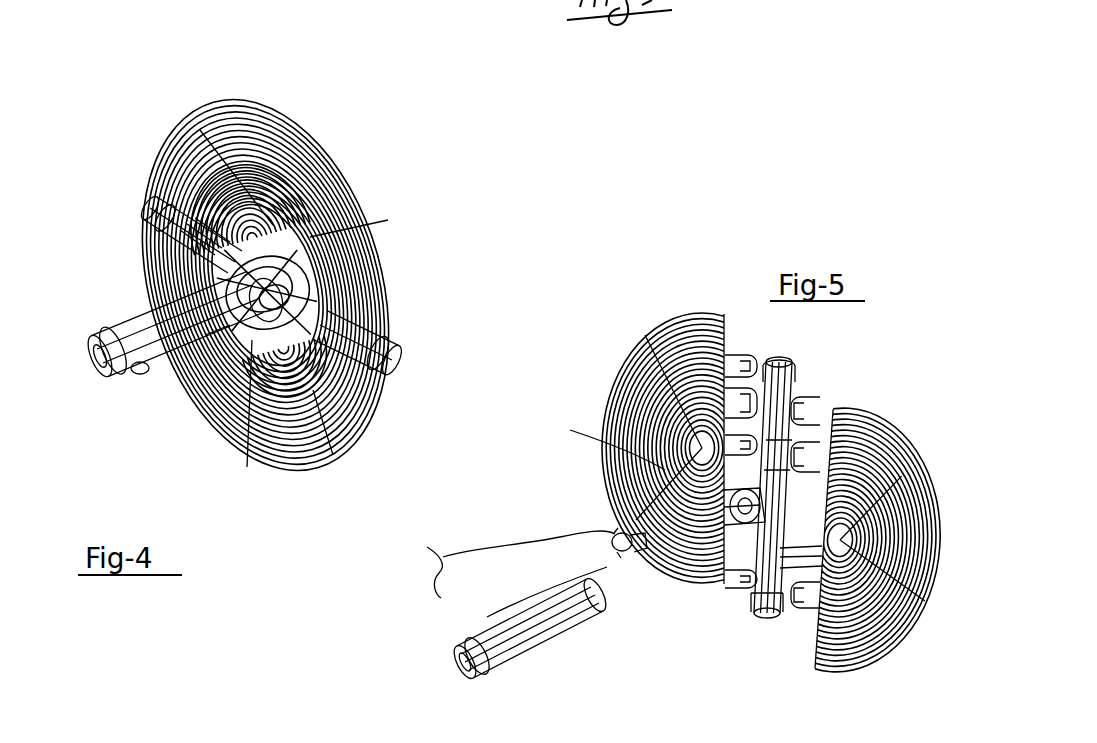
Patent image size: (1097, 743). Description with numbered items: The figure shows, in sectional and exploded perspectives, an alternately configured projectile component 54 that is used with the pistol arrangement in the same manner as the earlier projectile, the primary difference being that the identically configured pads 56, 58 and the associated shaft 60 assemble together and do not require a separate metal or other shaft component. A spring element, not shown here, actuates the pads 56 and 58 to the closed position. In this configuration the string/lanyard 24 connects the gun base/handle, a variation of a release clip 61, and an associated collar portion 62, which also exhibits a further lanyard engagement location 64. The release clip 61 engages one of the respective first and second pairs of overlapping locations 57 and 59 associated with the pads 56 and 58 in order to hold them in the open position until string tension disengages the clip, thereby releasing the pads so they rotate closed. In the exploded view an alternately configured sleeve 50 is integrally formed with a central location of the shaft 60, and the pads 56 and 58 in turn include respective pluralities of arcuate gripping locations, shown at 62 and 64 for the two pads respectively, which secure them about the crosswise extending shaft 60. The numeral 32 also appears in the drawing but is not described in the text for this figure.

In FIG. 4, the string/lanyard 24 is at (203, 343).
In FIG. 5, the string/lanyard 24 is at (517, 543).
In FIG. 4, the fitting 32 is at (201, 371).
In FIG. 5, the sleeve 50 is at (732, 598).
In FIG. 4, the projectile component 54 is at (420, 185).
In FIG. 5, the projectile component 54 is at (690, 292).
In FIG. 4, the pad 56 is at (300, 157).
In FIG. 5, the pad 56 is at (620, 377).
In FIG. 4, the first pair of overlapping locations 57 is at (142, 230).
In FIG. 5, the first pair of overlapping locations 57 is at (672, 465).
In FIG. 4, the pad 58 is at (230, 413).
In FIG. 5, the pad 58 is at (778, 538).
In FIG. 4, the second pair of overlapping locations 59 is at (249, 450).
In FIG. 5, the second pair of overlapping locations 59 is at (773, 567).
In FIG. 4, the shaft 60 is at (402, 355).
In FIG. 5, the shaft 60 is at (787, 390).
In FIG. 5, the release clip 61 is at (618, 530).
In FIG. 5, the collar portion 62 is at (768, 378).
In FIG. 5, the lanyard engagement location 64 is at (477, 623).